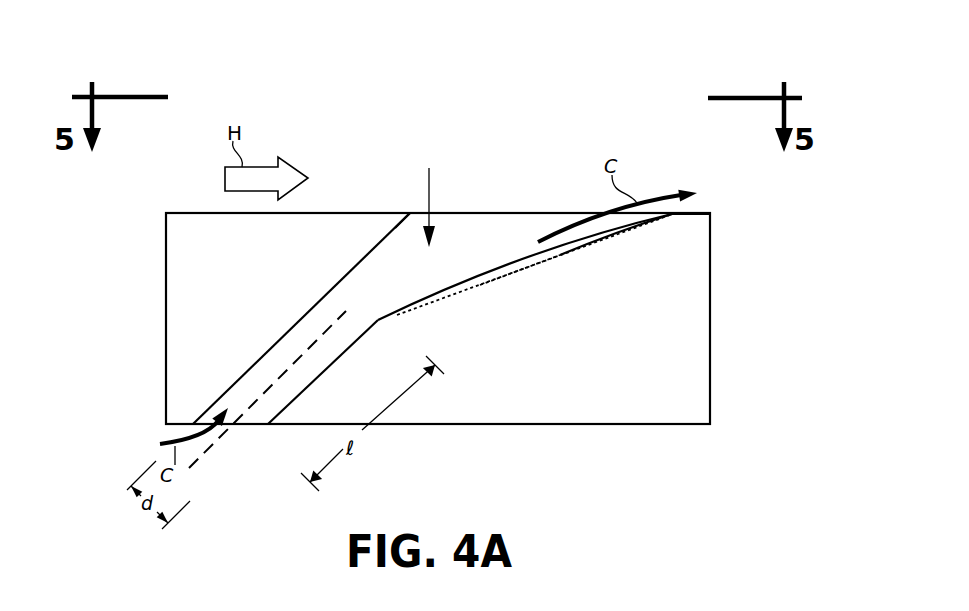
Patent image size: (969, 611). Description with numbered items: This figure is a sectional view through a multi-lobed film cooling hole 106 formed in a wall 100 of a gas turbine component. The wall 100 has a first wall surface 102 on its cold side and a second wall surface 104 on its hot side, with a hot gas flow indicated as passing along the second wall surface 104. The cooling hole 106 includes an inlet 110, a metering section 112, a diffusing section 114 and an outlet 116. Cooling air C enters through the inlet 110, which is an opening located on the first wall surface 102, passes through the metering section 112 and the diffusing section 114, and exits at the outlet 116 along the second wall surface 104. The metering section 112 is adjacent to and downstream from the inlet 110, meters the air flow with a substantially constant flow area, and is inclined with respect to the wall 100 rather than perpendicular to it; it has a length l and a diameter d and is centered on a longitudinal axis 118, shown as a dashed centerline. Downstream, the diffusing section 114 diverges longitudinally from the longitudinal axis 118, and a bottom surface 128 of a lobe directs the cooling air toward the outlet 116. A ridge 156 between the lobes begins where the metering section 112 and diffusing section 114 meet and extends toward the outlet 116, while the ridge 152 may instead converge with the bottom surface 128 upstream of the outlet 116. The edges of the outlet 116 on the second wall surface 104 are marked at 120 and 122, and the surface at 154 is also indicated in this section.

The wall 100 is at (776, 281).
The first wall surface 102 is at (687, 425).
The second wall surface 104 is at (198, 213).
The multi-lobed film cooling hole 106 is at (340, 274).
The inlet 110 is at (252, 428).
The metering section 112 is at (322, 381).
The diffusing section 114 is at (427, 196).
The outlet 116 is at (507, 213).
The longitudinal axis 118 is at (198, 460).
The outlet edge 120 is at (400, 213).
The trailing edge of outlet 122 is at (681, 218).
The bottom surface 128 is at (524, 269).
The ridge 152 is at (497, 271).
The curved surface portion 154 is at (609, 235).
The ridge 156 is at (580, 249).